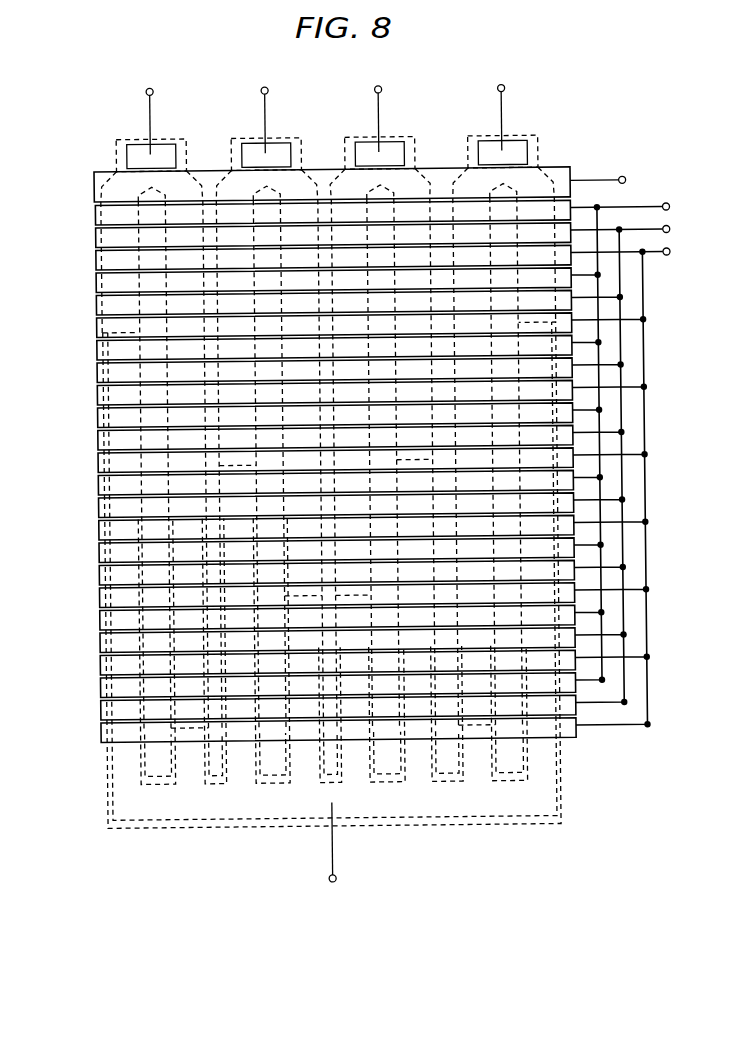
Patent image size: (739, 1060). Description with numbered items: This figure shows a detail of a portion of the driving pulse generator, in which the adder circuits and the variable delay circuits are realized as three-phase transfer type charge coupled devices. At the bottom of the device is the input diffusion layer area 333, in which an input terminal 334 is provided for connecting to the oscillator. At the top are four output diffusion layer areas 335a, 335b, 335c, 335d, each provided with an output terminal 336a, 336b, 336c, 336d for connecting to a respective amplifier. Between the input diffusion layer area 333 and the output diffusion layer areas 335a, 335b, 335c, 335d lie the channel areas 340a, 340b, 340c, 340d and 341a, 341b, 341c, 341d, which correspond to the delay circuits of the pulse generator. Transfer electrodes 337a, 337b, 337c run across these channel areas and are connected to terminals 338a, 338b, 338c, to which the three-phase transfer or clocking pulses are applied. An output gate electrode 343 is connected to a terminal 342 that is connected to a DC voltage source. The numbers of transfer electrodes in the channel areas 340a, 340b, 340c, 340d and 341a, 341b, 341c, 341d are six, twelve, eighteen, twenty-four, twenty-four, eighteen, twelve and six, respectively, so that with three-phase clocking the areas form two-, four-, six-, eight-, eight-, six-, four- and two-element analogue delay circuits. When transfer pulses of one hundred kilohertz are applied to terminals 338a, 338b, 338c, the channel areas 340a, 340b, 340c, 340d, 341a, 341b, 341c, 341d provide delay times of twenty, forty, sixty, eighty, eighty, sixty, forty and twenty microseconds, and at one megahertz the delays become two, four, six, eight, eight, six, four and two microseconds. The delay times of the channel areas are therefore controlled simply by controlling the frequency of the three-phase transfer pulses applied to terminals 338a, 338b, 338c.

The input diffusion layer area 333 is at (104, 815).
The input terminal 334 is at (328, 882).
The output diffusion layer area 335a is at (169, 150).
The output diffusion layer area 335b is at (284, 150).
The output diffusion layer area 335c is at (398, 150).
The output diffusion layer area 335d is at (521, 150).
The output terminal 336a is at (150, 89).
The output terminal 336b is at (266, 89).
The output terminal 336c is at (379, 89).
The output terminal 336d is at (502, 89).
The transfer electrode 337a is at (95, 218).
The transfer electrode 337b is at (95, 241).
The transfer electrode 337c is at (95, 263).
The terminal 338a is at (675, 205).
The terminal 338b is at (668, 230).
The terminal 338c is at (675, 250).
The channel area 340a is at (100, 305).
The channel area 340b is at (235, 304).
The channel area 340c is at (350, 304).
The channel area 340d is at (472, 302).
The channel area 341a is at (185, 329).
The channel area 341b is at (299, 329).
The channel area 341c is at (414, 324).
The channel area 341d is at (534, 258).
The terminal 342 is at (625, 182).
The output gate electrode 343 is at (565, 177).